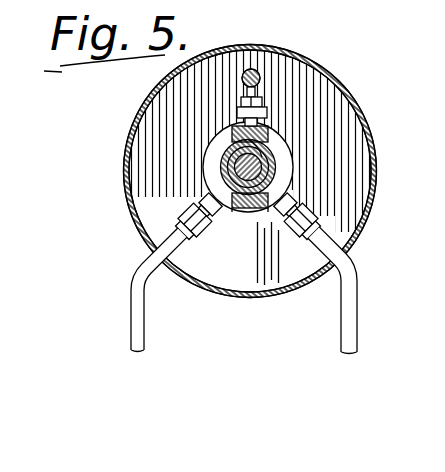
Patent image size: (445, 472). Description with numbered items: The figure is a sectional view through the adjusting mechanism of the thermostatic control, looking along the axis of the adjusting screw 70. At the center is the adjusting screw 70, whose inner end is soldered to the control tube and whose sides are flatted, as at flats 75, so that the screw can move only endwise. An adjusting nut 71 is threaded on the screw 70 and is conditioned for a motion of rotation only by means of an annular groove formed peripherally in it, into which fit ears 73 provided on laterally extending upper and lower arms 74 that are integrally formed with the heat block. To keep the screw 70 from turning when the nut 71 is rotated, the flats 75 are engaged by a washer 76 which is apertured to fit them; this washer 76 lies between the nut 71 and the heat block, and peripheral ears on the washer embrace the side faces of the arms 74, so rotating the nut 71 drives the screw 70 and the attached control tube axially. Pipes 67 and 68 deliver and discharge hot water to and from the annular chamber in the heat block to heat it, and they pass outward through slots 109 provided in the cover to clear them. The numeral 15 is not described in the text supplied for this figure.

The drum 15 is at (288, 188).
The pipe 67 is at (357, 305).
The pipe 68 is at (145, 321).
The adjusting screw 70 is at (263, 165).
The adjusting nut 71 is at (268, 131).
The ears 73 is at (207, 142).
The arms 74 is at (235, 127).
The flats 75 is at (222, 167).
The washer 76 is at (262, 156).
The slots 109 is at (172, 251).